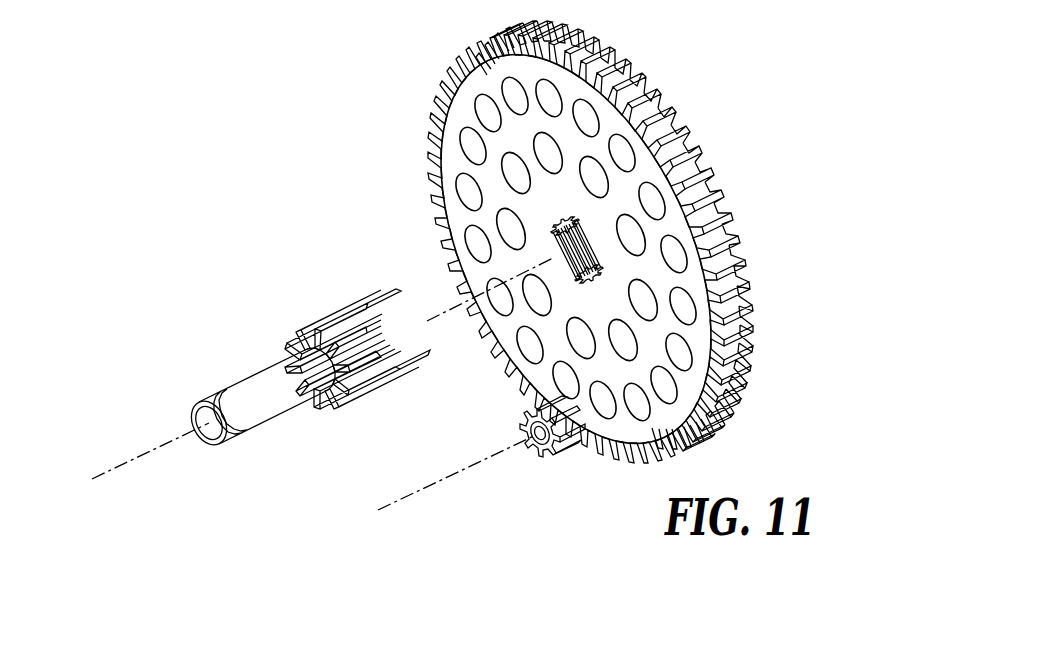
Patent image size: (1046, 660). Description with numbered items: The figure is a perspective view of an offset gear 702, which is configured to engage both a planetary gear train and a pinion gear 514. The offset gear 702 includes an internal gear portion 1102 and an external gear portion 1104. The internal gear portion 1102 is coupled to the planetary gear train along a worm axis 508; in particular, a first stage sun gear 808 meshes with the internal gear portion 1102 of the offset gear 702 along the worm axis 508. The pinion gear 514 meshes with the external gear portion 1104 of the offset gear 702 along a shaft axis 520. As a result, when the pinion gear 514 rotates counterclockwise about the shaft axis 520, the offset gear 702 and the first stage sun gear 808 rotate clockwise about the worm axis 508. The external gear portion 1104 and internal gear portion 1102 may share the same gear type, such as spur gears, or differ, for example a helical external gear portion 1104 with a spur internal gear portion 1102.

The offset gear 702 is at (616, 249).
The external gear portion 1104 is at (637, 98).
The internal gear portion 1102 is at (553, 230).
The first stage sun gear 808 is at (350, 320).
The worm axis 508 is at (122, 462).
The shaft axis 520 is at (418, 488).
The pinion gear 514 is at (568, 458).